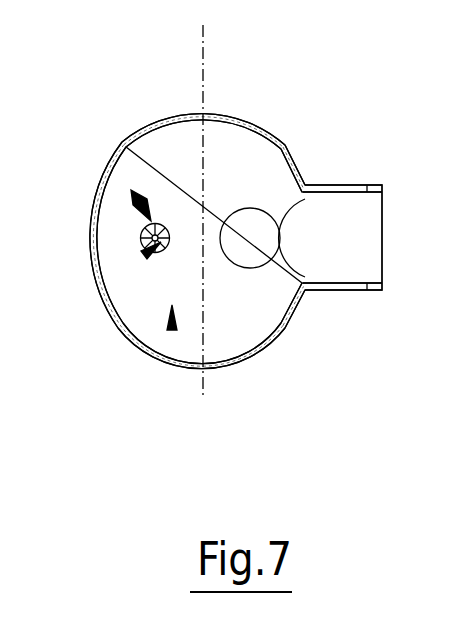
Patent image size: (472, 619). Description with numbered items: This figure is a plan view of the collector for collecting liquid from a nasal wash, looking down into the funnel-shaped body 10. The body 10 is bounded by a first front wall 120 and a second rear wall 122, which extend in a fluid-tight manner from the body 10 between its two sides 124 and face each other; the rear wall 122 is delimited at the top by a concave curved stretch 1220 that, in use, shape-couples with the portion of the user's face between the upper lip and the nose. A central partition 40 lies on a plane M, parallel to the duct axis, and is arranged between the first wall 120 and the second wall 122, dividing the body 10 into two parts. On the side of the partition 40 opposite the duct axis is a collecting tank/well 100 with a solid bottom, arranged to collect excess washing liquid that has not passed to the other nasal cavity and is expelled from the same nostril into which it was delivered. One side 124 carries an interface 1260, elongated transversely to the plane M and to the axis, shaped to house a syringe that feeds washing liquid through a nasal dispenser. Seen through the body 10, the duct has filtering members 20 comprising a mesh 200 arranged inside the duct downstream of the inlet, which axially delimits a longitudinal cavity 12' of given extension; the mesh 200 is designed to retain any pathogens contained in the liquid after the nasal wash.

The funnel-shaped body 10 is at (167, 162).
The first front wall 120 is at (195, 113).
The sides 124 is at (302, 162).
The second rear wall 122 is at (142, 327).
The concave curved stretch 1220 is at (172, 330).
The interface 1260 is at (348, 191).
The collecting tank/well 100 is at (250, 252).
The mesh 200 is at (142, 237).
The filtering members 20 is at (131, 190).
The longitudinal cavity 12' is at (98, 267).
The central partition 40 is at (208, 172).
The plane M is at (205, 371).